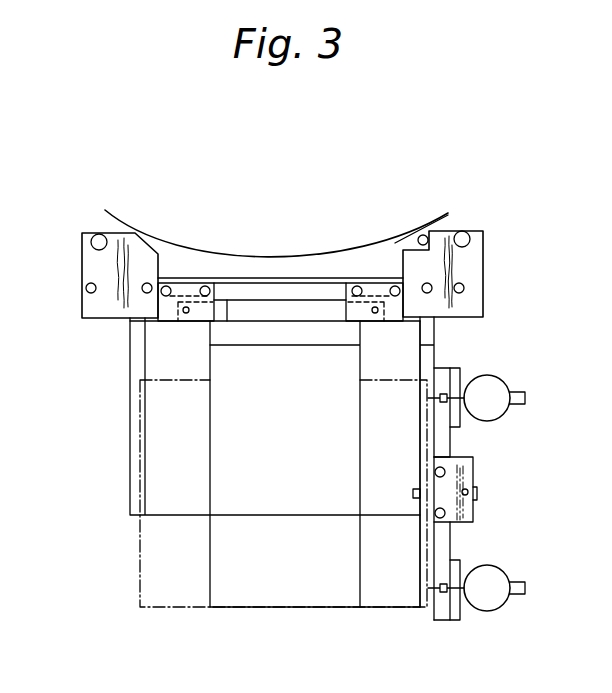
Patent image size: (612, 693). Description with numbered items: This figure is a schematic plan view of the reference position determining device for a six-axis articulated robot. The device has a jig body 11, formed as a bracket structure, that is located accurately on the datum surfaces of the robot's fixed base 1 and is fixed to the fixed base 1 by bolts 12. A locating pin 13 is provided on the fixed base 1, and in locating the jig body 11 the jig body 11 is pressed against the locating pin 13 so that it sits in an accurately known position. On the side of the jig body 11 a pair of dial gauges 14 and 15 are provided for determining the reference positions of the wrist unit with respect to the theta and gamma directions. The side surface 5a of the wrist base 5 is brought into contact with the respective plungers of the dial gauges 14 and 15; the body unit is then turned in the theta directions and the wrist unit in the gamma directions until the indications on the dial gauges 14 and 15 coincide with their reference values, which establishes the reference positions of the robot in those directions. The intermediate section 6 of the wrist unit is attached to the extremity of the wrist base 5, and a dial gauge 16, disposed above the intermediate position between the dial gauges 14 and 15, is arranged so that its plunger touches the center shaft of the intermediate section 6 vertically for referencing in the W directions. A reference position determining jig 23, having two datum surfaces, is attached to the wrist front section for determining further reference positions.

The fixed base 1 is at (349, 246).
The wrist base 5 is at (382, 590).
The side surface of the wrist base 5a is at (437, 532).
The intermediate section of the wrist unit 6 is at (267, 557).
The jig body 11 is at (484, 298).
The bolts 12 is at (84, 246).
The locating pin 13 is at (448, 215).
The dial gauge 14 is at (493, 598).
The dial gauge 15 is at (496, 386).
The dial gauge 16 is at (412, 236).
The reference position determining jig 23 is at (257, 310).